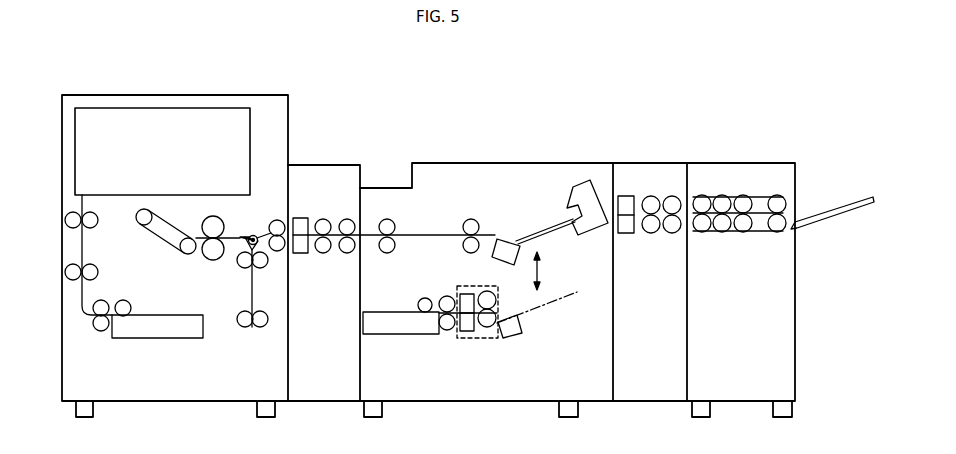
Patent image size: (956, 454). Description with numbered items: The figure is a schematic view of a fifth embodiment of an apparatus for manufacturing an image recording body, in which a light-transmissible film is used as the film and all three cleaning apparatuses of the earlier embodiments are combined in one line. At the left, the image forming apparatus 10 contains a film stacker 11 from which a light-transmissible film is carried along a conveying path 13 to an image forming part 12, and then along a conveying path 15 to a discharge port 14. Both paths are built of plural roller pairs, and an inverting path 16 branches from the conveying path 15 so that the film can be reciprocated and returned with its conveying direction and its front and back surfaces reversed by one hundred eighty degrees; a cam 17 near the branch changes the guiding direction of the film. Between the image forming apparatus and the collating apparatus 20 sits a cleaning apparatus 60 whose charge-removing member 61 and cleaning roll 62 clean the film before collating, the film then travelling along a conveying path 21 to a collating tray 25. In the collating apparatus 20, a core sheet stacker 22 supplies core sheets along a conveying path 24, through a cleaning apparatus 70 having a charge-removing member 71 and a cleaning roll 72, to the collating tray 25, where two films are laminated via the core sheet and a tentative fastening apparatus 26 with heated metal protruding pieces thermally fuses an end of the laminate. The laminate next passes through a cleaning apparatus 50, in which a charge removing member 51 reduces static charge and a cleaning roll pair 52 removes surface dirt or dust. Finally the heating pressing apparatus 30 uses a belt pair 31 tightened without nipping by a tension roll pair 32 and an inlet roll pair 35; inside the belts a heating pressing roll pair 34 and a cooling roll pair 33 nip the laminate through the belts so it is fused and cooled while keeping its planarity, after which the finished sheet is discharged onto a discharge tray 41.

The image forming apparatus 10 is at (162, 78).
The film stacker 11 is at (153, 338).
The image forming part 12 is at (222, 108).
The conveying path 13 is at (73, 241).
The discharge port 14 is at (278, 220).
The conveying path 15 is at (166, 240).
The inverting path 16 is at (252, 294).
The cam 17 is at (253, 235).
The collating apparatus 20 is at (478, 136).
The conveying path 21 is at (425, 233).
The core sheet stacker 22 is at (400, 334).
The conveying path 24 is at (447, 296).
The collating tray 25 is at (540, 226).
The tentative fastening apparatus 26 is at (583, 180).
The heating pressing apparatus 30 is at (730, 133).
The belt pair 31 is at (761, 232).
The tension roll pair 32 is at (777, 232).
The cooling roll pair 33 is at (743, 232).
The heating pressing roll pair 34 is at (722, 232).
The inlet roll pair 35 is at (702, 232).
The discharge tray 41 is at (838, 208).
The cleaning apparatus 50 is at (640, 129).
The charge removing member 51 is at (627, 196).
The cleaning roll pair 52 is at (652, 196).
The cleaning apparatus 60 is at (315, 136).
The charge-removing member 61 is at (302, 218).
The cleaning roll 62 is at (324, 219).
The cleaning apparatus 70 is at (492, 342).
The charge-removing member 71 is at (487, 327).
The cleaning roll 72 is at (467, 331).